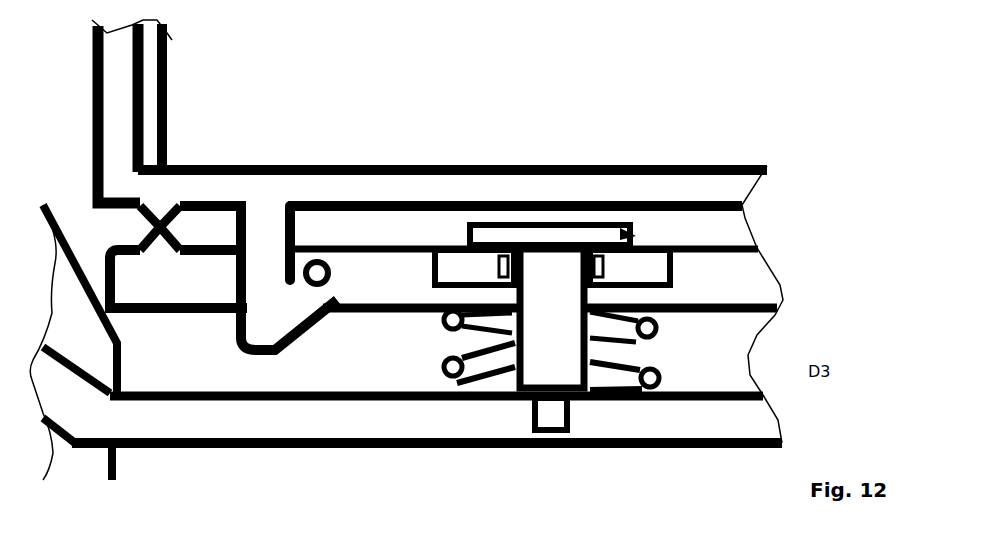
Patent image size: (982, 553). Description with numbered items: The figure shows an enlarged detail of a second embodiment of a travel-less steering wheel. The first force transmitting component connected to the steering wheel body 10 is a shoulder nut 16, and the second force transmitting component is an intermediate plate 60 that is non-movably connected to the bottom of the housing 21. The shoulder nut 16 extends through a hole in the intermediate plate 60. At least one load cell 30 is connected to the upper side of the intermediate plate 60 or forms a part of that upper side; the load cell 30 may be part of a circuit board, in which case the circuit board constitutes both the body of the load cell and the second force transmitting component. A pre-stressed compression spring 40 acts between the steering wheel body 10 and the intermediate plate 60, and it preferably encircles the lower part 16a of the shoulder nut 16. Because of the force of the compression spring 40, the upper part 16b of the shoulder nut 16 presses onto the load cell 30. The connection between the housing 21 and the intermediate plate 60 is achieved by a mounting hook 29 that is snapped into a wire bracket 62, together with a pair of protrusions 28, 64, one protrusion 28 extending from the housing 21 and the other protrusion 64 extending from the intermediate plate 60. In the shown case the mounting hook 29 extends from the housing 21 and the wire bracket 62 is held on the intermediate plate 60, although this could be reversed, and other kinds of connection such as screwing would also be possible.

The steering wheel body 10 is at (707, 423).
The shoulder nut 16 is at (545, 307).
The lower part of the shoulder nut 16a is at (530, 395).
The upper part of the shoulder nut 16b is at (497, 233).
The housing 21 is at (510, 185).
The protrusion 28 is at (160, 218).
The mounting hook 29 is at (270, 247).
The load cell 30 is at (457, 267).
The compression spring 40 is at (453, 372).
The intermediate plate 60 is at (737, 280).
The wire bracket 62 is at (317, 286).
The protrusion 64 is at (157, 252).